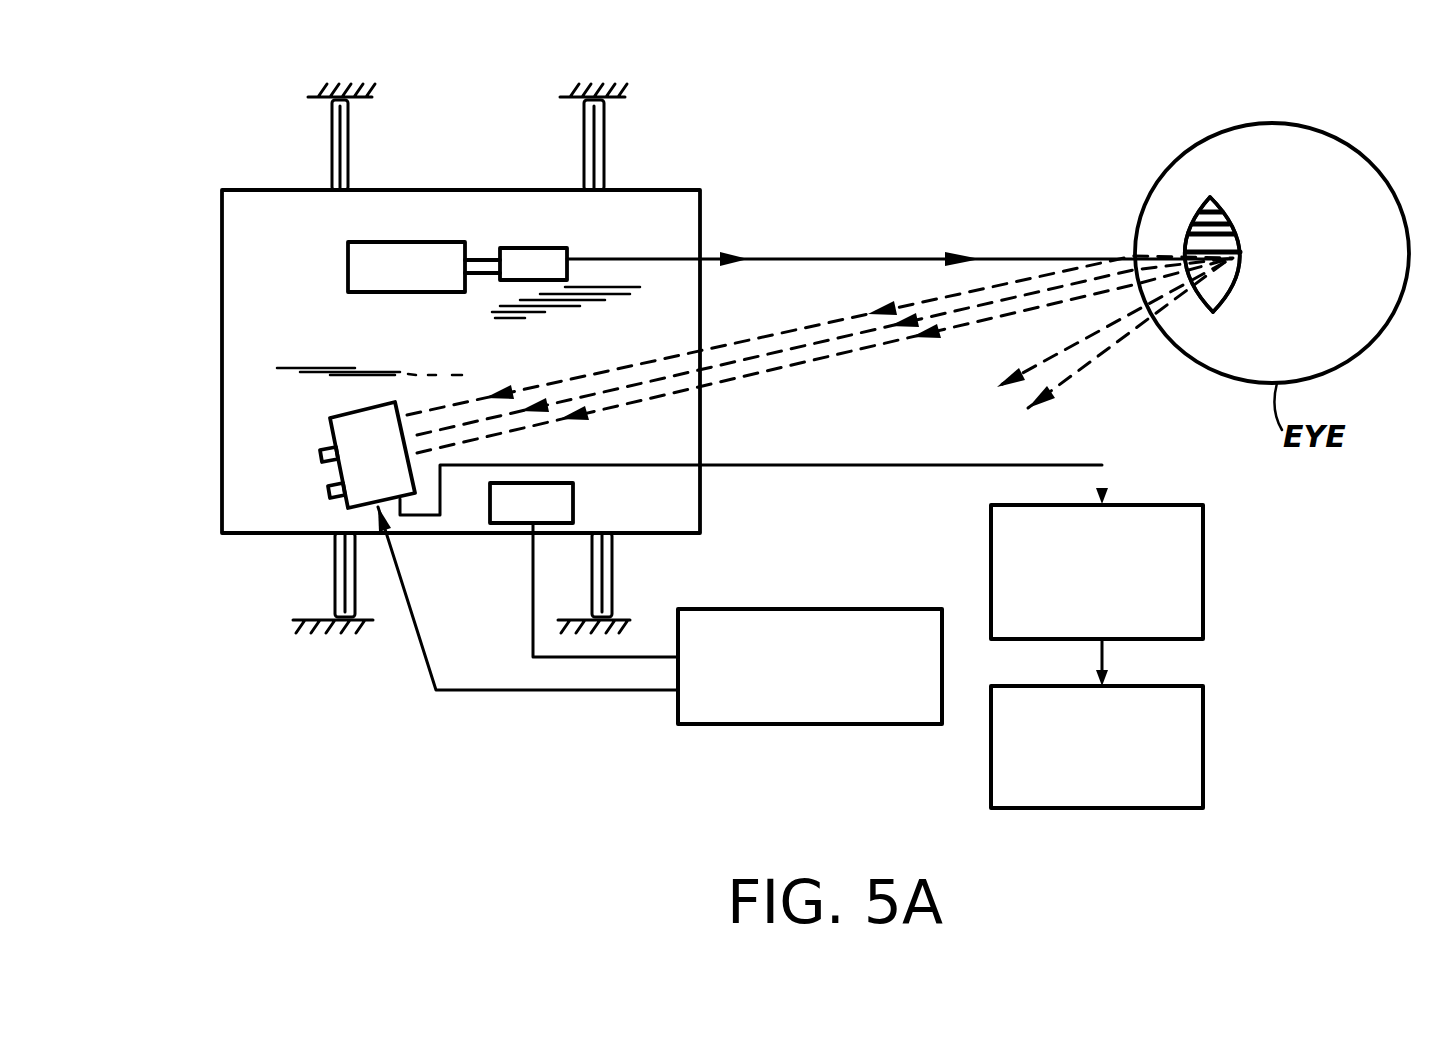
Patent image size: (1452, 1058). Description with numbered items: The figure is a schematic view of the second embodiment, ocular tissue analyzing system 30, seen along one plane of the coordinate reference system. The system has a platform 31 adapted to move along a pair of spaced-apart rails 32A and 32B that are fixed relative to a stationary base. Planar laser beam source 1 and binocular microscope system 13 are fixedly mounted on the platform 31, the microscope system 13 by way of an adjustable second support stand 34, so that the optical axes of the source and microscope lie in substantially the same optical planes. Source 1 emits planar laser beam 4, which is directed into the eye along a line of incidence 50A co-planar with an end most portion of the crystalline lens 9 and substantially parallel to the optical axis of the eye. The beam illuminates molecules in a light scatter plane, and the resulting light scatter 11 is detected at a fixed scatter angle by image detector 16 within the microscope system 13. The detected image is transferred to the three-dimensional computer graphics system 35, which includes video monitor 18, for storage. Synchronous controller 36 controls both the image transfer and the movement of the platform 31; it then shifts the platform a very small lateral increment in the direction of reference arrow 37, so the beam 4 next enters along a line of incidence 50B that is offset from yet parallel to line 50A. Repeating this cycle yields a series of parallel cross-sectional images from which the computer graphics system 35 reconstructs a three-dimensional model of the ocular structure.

The planar laser beam source 1 is at (445, 215).
The planar laser beam 4 is at (897, 259).
The crystalline lens 9 is at (1213, 312).
The light scatter 11 is at (745, 337).
The binocular microscope system 13 is at (330, 430).
The image detector 16 is at (373, 507).
The video monitor 18 is at (1205, 725).
The ocular tissue analyzing system 30 is at (250, 613).
The platform 31 is at (222, 300).
The rail 32A is at (332, 152).
The rail 32B is at (604, 148).
The second support stand 34 is at (517, 523).
The 3-D computer graphics system 35 is at (1203, 537).
The synchronous controller 36 is at (740, 724).
The reference arrow 37 is at (680, 540).
The line of incidence 50A is at (1220, 210).
The line of incidence 50B is at (1233, 218).